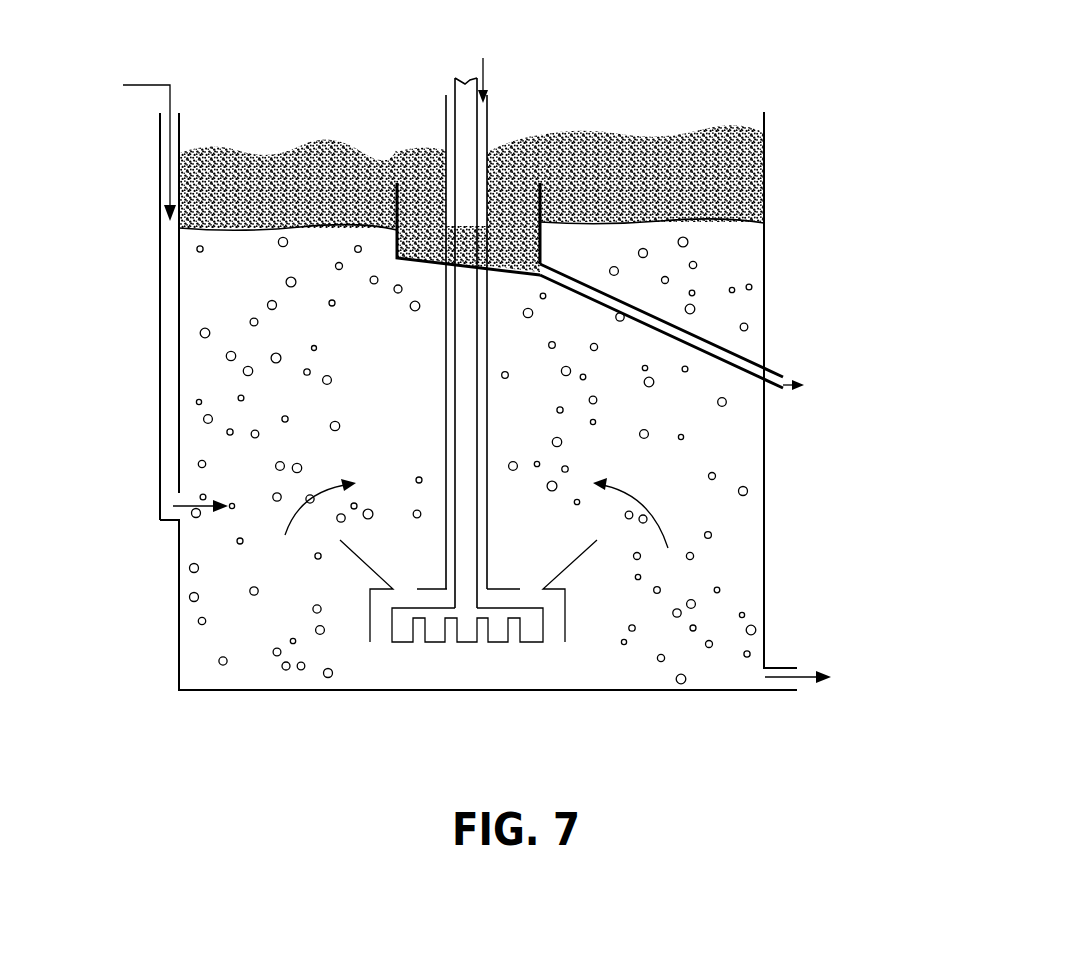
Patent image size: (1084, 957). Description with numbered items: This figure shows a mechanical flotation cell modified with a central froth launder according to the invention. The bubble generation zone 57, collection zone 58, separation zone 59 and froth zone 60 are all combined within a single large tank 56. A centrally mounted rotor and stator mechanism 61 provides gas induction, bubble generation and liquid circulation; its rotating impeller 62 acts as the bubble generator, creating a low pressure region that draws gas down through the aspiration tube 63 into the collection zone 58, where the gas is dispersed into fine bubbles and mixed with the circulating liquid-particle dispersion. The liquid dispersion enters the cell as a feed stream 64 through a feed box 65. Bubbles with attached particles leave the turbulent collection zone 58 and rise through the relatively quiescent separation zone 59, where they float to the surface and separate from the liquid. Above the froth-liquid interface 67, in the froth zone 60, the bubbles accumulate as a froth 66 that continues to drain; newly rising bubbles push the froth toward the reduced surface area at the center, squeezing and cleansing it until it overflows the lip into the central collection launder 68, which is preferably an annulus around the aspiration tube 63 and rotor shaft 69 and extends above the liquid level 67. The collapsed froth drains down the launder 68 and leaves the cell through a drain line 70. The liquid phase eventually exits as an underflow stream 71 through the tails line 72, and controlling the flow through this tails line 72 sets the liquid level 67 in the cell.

The tank 56 is at (767, 302).
The bubble generation zone 57 is at (553, 640).
The collection zone 58 is at (634, 632).
The separation zone 59 is at (635, 422).
The froth zone 60 is at (750, 178).
The rotor and stator mechanism 61 is at (367, 642).
The rotating impeller 62 is at (408, 642).
The aspiration tube 63 is at (487, 127).
The feed stream 64 is at (133, 82).
The feed box 65 is at (160, 246).
The froth 66 is at (633, 135).
The froth-liquid interface 67 is at (740, 225).
The collection launder 68 is at (373, 152).
The rotor shaft 69 is at (463, 77).
The drain line 70 is at (773, 373).
The underflow stream 71 is at (800, 680).
The tails line 72 is at (782, 667).